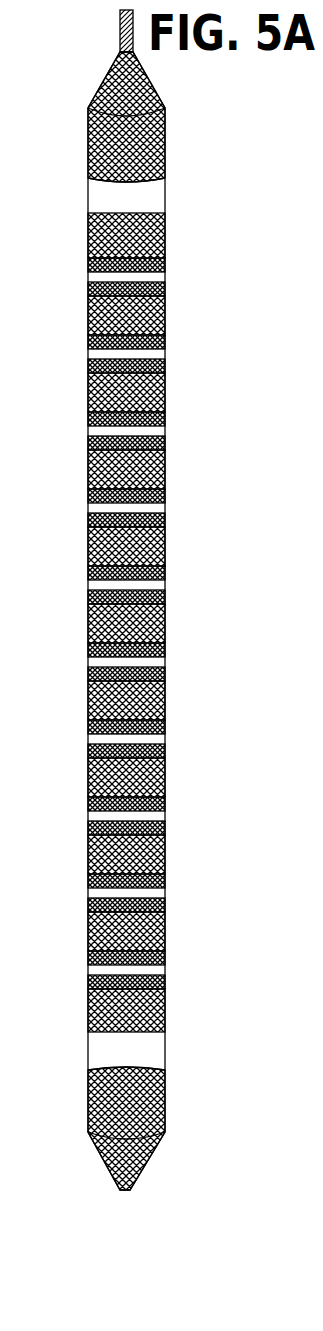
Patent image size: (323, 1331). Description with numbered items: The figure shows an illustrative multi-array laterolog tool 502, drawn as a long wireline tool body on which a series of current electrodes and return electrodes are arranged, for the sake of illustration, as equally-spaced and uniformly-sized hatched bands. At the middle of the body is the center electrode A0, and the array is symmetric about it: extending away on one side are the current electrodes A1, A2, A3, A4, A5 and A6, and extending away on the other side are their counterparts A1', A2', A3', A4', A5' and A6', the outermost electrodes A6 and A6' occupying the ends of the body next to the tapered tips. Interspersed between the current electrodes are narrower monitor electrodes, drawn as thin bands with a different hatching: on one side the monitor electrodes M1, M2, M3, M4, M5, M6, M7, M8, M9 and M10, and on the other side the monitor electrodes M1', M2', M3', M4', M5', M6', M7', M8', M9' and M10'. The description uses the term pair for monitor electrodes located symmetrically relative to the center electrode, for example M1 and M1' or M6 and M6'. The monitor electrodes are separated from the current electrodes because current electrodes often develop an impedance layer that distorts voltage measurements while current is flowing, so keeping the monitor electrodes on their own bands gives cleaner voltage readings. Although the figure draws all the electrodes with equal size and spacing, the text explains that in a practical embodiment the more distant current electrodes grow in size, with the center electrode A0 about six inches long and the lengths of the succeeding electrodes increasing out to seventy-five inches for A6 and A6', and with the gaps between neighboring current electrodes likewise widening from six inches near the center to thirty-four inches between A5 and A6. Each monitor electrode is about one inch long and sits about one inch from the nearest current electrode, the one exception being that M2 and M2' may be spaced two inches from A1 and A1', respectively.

The multi-array laterolog tool 502 is at (92, 103).
The current electrode A6 is at (146, 117).
The current electrode A5 is at (146, 235).
The current electrode A4 is at (146, 315).
The current electrode A3 is at (146, 392).
The current electrode A2 is at (146, 469).
The current electrode A1 is at (146, 546).
The center electrode A0 is at (167, 621).
The current electrode A1' is at (148, 700).
The current electrode A2' is at (148, 777).
The current electrode A3' is at (148, 854).
The current electrode A4' is at (148, 931).
The current electrode A5' is at (148, 1010).
The current electrode A6' is at (148, 1128).
The monitor electrode M10 is at (101, 263).
The monitor electrode M9 is at (102, 287).
The monitor electrode M8 is at (102, 340).
The monitor electrode M7 is at (102, 364).
The monitor electrode M6 is at (102, 417).
The monitor electrode M5 is at (102, 441).
The monitor electrode M4 is at (102, 494).
The monitor electrode M3 is at (102, 518).
The monitor electrode M2 is at (102, 571).
The monitor electrode M1 is at (102, 595).
The monitor electrode M1' is at (102, 648).
The monitor electrode M2' is at (102, 672).
The monitor electrode M3' is at (102, 725).
The monitor electrode M4' is at (102, 749).
The monitor electrode M5' is at (102, 802).
The monitor electrode M6' is at (102, 826).
The monitor electrode M7' is at (102, 879).
The monitor electrode M8' is at (102, 903).
The monitor electrode M9' is at (102, 956).
The monitor electrode M10' is at (99, 980).